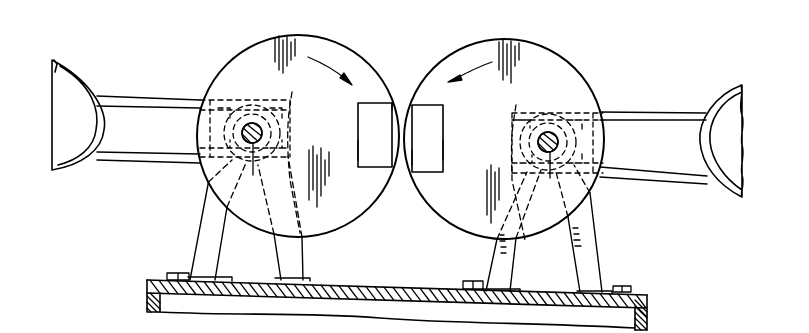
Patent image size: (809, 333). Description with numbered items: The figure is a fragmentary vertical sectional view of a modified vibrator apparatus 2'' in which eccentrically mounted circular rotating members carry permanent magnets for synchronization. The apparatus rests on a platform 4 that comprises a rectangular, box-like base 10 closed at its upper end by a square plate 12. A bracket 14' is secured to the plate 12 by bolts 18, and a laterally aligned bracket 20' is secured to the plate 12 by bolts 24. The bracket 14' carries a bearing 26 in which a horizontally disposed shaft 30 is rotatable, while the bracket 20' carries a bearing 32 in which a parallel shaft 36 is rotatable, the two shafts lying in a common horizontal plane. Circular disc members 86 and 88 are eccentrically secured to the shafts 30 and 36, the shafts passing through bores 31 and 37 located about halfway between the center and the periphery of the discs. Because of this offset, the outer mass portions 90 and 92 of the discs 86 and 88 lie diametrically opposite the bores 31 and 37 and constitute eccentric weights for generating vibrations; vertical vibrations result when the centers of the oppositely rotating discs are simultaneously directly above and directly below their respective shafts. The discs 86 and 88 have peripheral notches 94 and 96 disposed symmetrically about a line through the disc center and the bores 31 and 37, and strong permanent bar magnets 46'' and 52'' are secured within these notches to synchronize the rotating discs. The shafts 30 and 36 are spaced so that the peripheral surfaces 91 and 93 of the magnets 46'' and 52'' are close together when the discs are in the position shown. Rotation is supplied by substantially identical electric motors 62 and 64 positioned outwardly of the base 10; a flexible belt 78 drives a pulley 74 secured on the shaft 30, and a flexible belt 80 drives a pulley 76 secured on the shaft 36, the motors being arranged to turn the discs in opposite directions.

The apparatus 2'' is at (614, 54).
The platform 4 is at (147, 291).
The base 10 is at (644, 316).
The plate 12 is at (640, 297).
The bracket 14' is at (264, 218).
The bolts 18 is at (176, 272).
The bracket 20' is at (559, 229).
The bolts 24 is at (472, 281).
The bearing 26 is at (304, 158).
The shaft 30 is at (256, 122).
The bore 31 is at (249, 168).
The bearing 32 is at (515, 165).
The shaft 36 is at (548, 132).
The bore 37 is at (550, 175).
The permanent bar magnet 46'' is at (366, 125).
The permanent bar magnet 52'' is at (442, 150).
The electric motor 62 is at (70, 63).
The electric motor 64 is at (722, 96).
The pulley 74 is at (210, 140).
The pulley 76 is at (592, 140).
The flexible belt 78 is at (194, 97).
The flexible belt 80 is at (661, 112).
The circular disc member 86 is at (251, 46).
The circular disc member 88 is at (530, 40).
The outer mass portion 90 is at (327, 127).
The peripheral surface 91 is at (390, 103).
The outer mass portion 92 is at (475, 98).
The peripheral surface 93 is at (412, 160).
The peripheral notch 94 is at (358, 148).
The peripheral notch 96 is at (440, 148).